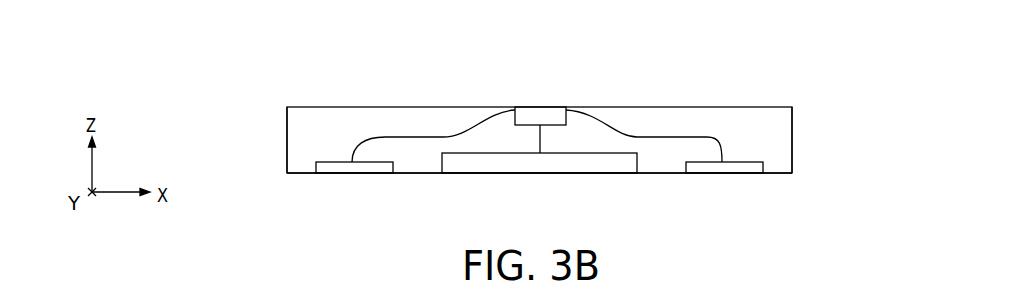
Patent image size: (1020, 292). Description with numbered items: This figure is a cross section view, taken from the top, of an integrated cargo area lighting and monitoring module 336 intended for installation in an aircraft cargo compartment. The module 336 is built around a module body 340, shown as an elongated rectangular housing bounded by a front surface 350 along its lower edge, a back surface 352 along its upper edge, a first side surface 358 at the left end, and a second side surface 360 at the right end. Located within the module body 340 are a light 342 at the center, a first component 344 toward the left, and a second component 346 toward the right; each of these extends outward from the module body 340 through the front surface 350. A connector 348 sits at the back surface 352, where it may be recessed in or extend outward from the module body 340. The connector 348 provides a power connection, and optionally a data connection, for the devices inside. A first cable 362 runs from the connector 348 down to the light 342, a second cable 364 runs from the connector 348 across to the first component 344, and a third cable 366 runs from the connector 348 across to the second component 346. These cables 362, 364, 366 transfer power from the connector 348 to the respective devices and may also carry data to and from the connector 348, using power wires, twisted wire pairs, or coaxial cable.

The integrated cargo area lighting and monitoring module 336 is at (258, 78).
The module body 340 is at (866, 142).
The light 342 is at (602, 162).
The first component 344 is at (343, 172).
The second component 346 is at (732, 167).
The connector 348 is at (526, 107).
The front surface 350 is at (408, 172).
The back surface 352 is at (745, 107).
The first side surface 358 is at (287, 130).
The second side surface 360 is at (793, 113).
The first cable 362 is at (538, 149).
The second cable 364 is at (386, 137).
The third cable 366 is at (660, 135).